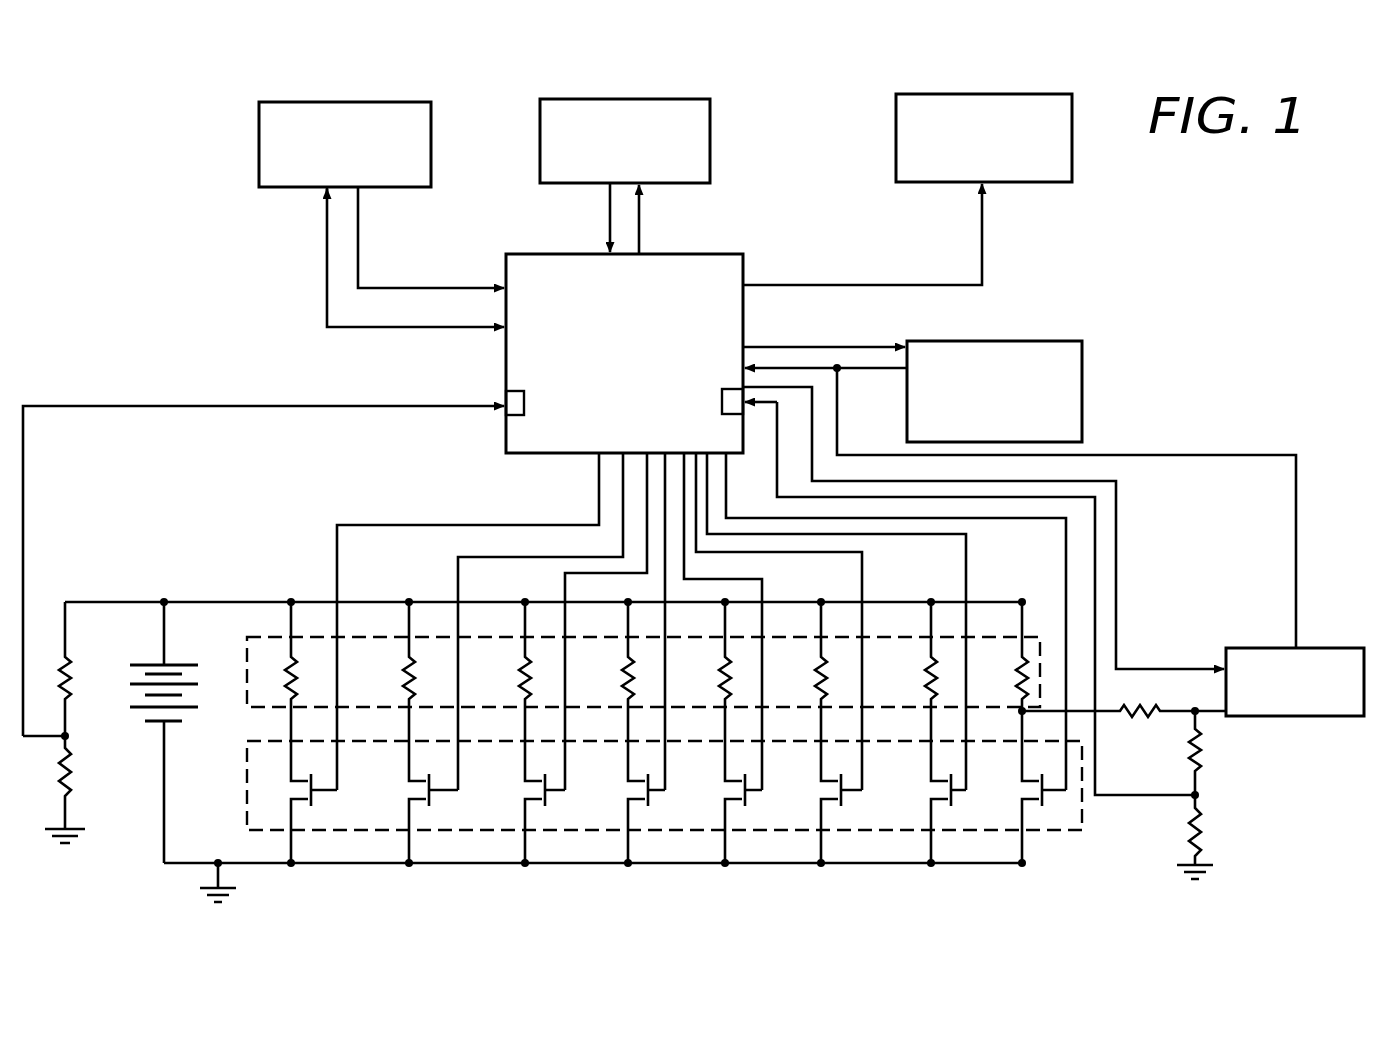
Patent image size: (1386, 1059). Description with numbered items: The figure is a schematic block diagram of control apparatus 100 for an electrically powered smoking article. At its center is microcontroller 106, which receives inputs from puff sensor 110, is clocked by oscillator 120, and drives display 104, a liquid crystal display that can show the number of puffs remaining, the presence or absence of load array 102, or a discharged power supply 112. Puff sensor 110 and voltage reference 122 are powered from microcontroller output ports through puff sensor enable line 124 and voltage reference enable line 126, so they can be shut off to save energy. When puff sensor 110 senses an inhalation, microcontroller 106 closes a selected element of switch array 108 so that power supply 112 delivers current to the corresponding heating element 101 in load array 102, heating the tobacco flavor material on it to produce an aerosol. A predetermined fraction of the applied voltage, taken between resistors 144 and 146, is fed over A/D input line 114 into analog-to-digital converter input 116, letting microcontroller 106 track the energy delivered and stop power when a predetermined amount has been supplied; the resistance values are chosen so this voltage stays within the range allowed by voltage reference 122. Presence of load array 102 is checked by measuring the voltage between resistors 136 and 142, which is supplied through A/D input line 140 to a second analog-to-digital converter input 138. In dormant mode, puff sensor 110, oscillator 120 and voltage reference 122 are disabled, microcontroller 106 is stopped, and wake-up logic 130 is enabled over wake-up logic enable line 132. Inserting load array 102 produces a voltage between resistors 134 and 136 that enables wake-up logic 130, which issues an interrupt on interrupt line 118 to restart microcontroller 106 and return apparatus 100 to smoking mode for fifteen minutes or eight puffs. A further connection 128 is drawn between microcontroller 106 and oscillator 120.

The control apparatus 100 is at (261, 70).
The heating element 101 is at (293, 686).
The load array 102 is at (242, 641).
The display 104 is at (962, 94).
The microcontroller 106 is at (572, 253).
The switch array 108 is at (240, 796).
The puff sensor 110 is at (341, 102).
The power supply 112 is at (131, 692).
The A/D input line 114 is at (317, 406).
The analog-to-digital converter input 116 is at (524, 415).
The interrupt line 118 is at (794, 366).
The oscillator 120 is at (1070, 341).
The voltage reference 122 is at (612, 99).
The puff sensor enable line 124 is at (414, 328).
The voltage reference enable line 126 is at (640, 212).
The oscillator control line 128 is at (878, 345).
The wake-up logic 130 is at (1326, 716).
The wake-up logic enable line 132 is at (1117, 567).
The resistor 134 is at (1150, 705).
The resistor 136 is at (1190, 748).
The analog-to-digital converter input 138 is at (722, 402).
The A/D input line 140 is at (777, 482).
The resistor 142 is at (1192, 829).
The resistor 144 is at (75, 680).
The resistor 146 is at (73, 795).